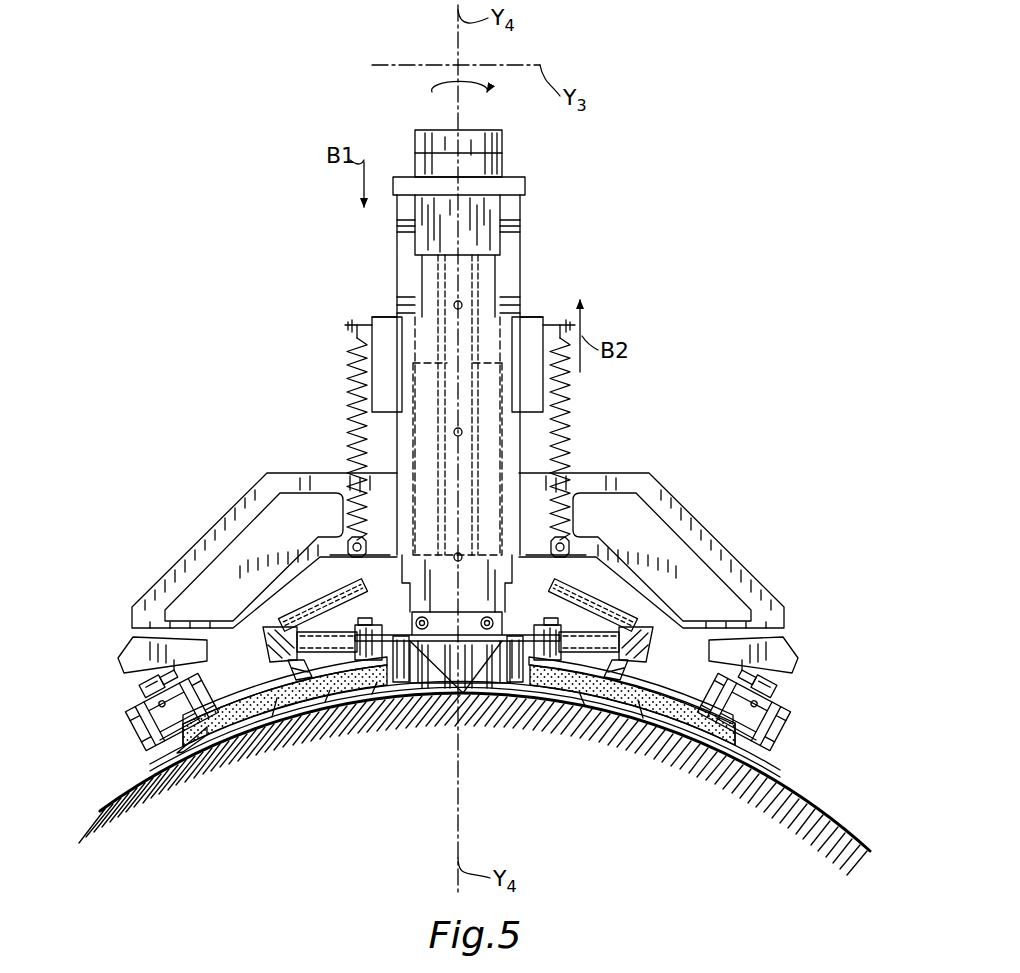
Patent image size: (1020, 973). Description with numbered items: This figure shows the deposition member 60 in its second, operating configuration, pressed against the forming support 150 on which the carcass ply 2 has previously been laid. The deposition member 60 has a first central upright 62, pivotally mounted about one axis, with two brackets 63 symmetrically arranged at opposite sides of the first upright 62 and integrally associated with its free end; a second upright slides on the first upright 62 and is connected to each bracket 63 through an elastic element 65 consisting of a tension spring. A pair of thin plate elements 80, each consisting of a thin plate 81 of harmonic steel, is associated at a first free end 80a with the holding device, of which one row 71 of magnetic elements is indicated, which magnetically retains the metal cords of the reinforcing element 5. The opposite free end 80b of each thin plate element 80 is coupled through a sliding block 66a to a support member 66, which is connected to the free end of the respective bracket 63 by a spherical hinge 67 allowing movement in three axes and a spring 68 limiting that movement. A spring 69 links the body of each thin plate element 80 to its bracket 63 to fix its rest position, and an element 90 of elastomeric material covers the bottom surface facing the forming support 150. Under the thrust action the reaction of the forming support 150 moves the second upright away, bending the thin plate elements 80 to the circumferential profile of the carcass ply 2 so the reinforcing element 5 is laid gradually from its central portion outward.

The deposition member 60 is at (624, 197).
The first central upright 62 is at (398, 266).
The elastic element 65 is at (357, 355).
The bracket 63 is at (228, 520).
The spring 69 is at (327, 597).
The thin plate element 80 is at (265, 682).
The first free end 80a is at (401, 703).
The opposite free end 80b is at (200, 735).
The thin plate 81 is at (274, 712).
The element of elastomeric material 90 is at (330, 705).
The reinforcing element 5 is at (375, 705).
The row of magnetic elements 71 is at (465, 700).
The spring 68 is at (197, 652).
The spherical hinge 67 is at (143, 684).
The support member 66 is at (125, 720).
The sliding block 66a is at (146, 745).
The carcass ply 2 is at (772, 766).
The forming support 150 is at (816, 810).